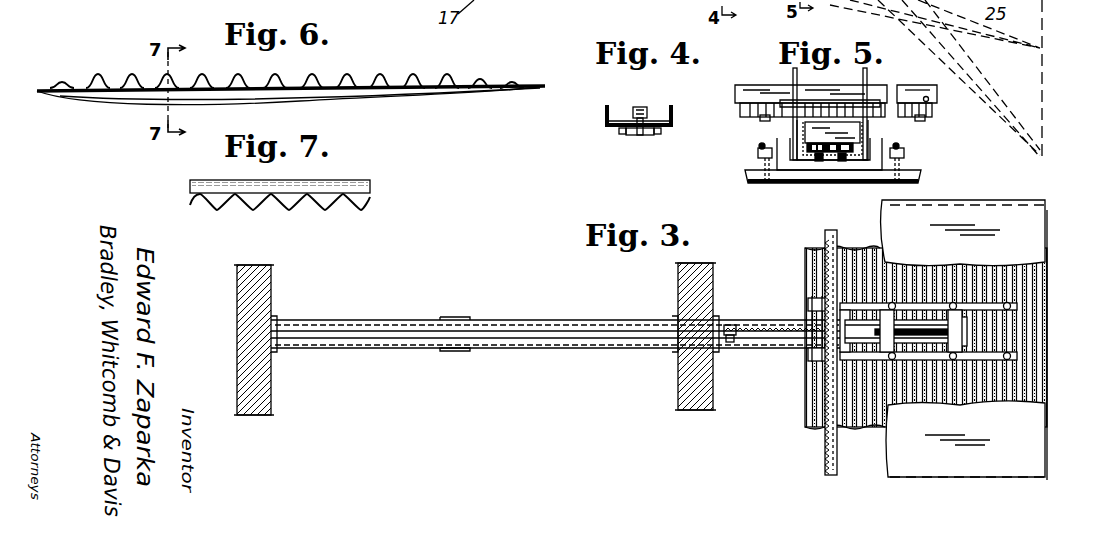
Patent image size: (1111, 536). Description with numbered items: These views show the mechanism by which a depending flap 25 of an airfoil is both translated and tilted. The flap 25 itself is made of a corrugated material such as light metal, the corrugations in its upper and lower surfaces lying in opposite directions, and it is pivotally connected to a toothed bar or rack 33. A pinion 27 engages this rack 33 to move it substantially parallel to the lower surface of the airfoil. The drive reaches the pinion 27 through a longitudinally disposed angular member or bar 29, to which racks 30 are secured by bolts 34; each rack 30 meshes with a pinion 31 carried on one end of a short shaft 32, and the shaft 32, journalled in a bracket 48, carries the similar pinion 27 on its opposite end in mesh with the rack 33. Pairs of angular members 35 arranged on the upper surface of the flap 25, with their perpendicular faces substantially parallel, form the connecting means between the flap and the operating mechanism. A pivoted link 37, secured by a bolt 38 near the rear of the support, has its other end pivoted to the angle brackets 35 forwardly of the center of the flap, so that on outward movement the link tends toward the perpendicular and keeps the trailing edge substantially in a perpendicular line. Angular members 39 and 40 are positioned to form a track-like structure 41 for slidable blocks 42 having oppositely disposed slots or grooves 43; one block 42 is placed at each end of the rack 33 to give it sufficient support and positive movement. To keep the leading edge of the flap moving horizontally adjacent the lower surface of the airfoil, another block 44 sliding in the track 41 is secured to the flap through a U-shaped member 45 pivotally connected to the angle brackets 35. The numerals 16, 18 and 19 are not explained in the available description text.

In FIG. 3, the vehicle body wall 16 is at (1032, 240).
In FIG. 3, the post 18 is at (272, 283).
In FIG. 3, the post 19 is at (713, 272).
In FIG. 3, the flap 25 is at (1040, 332).
In FIG. 5, the pinion 27 is at (818, 135).
In FIG. 5, the angular member or bar 29 is at (850, 90).
In FIG. 3, the angular member or bar 29 is at (826, 450).
In FIG. 5, the rack 30 is at (912, 120).
In FIG. 3, the rack 30 is at (838, 438).
In FIG. 5, the pinion 31 is at (812, 112).
In FIG. 3, the pinion 31 is at (818, 298).
In FIG. 5, the short shaft 32 is at (833, 98).
In FIG. 4, the toothed bar or rack 33 is at (665, 100).
In FIG. 5, the toothed bar or rack 33 is at (832, 152).
In FIG. 3, the toothed bar or rack 33 is at (775, 330).
In FIG. 5, the bolt 34 is at (760, 118).
In FIG. 5, the angular member 35 is at (758, 165).
In FIG. 3, the angular member 35 is at (1017, 306).
In FIG. 3, the pivoted link 37 is at (910, 330).
In FIG. 3, the bolt 38 is at (962, 312).
In FIG. 4, the angular member 39 is at (674, 117).
In FIG. 3, the angular member 39 is at (750, 350).
In FIG. 4, the angular member 40 is at (604, 118).
In FIG. 3, the angular member 40 is at (750, 320).
In FIG. 4, the track-like structure 41 is at (626, 126).
In FIG. 3, the track-like structure 41 is at (728, 325).
In FIG. 4, the slidable block 42 is at (638, 136).
In FIG. 3, the slidable block 42 is at (729, 343).
In FIG. 4, the slot or groove 43 is at (625, 134).
In FIG. 5, the block 44 is at (834, 162).
In FIG. 5, the U-shaped member 45 is at (858, 178).
In FIG. 5, the bracket 48 is at (858, 128).